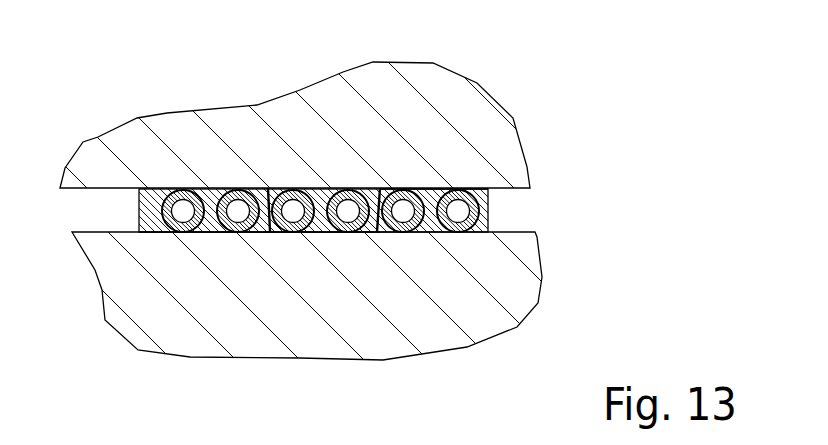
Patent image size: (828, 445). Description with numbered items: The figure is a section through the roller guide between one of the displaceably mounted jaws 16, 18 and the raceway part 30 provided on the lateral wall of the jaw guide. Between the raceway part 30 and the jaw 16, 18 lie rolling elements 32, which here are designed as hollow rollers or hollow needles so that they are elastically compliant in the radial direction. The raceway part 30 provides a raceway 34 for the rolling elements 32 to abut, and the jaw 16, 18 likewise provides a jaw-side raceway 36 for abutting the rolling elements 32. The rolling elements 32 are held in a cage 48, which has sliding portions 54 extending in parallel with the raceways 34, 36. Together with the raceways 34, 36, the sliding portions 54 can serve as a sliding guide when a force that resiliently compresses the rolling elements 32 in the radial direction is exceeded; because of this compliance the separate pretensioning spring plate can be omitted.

The jaw 16 is at (319, 108).
The jaw 18 is at (487, 112).
The raceway part 30 is at (500, 323).
The rolling element 32 is at (305, 188).
The raceway 34 is at (377, 233).
The jaw-side raceway 36 is at (427, 188).
The cage 48 is at (490, 210).
The sliding portion 54 is at (268, 188).